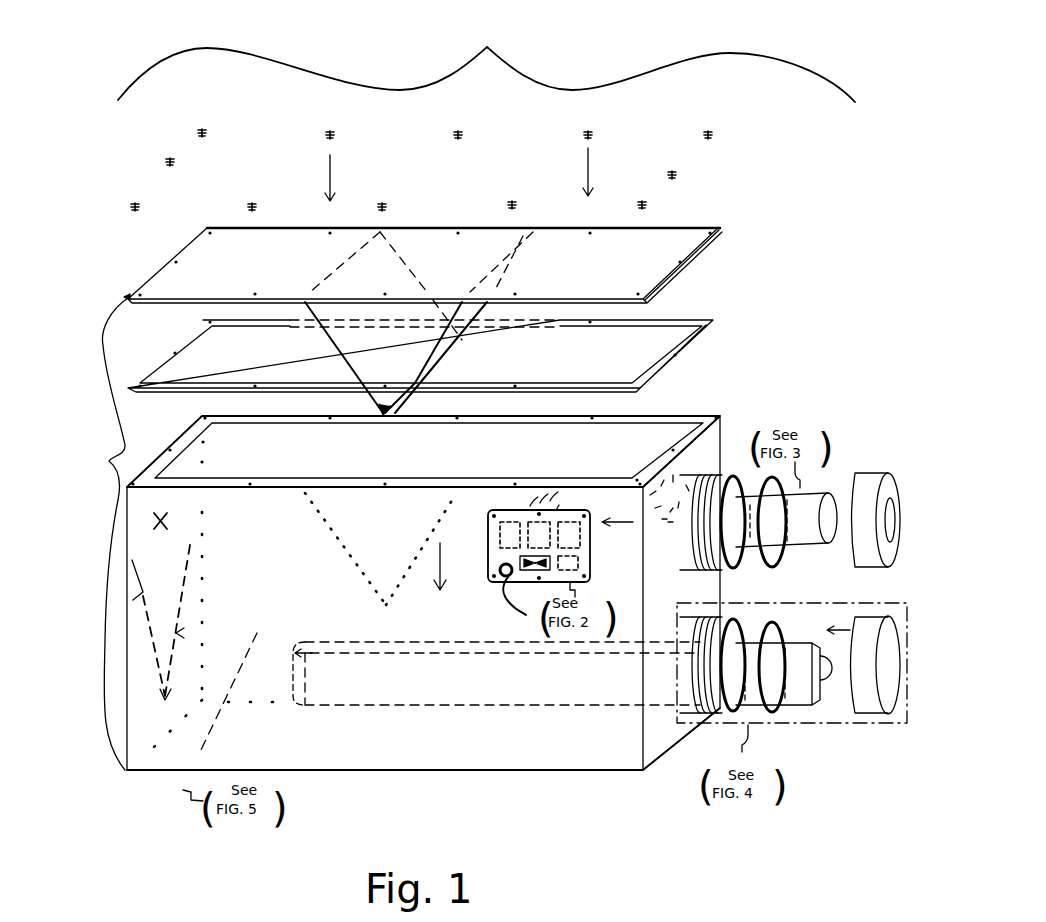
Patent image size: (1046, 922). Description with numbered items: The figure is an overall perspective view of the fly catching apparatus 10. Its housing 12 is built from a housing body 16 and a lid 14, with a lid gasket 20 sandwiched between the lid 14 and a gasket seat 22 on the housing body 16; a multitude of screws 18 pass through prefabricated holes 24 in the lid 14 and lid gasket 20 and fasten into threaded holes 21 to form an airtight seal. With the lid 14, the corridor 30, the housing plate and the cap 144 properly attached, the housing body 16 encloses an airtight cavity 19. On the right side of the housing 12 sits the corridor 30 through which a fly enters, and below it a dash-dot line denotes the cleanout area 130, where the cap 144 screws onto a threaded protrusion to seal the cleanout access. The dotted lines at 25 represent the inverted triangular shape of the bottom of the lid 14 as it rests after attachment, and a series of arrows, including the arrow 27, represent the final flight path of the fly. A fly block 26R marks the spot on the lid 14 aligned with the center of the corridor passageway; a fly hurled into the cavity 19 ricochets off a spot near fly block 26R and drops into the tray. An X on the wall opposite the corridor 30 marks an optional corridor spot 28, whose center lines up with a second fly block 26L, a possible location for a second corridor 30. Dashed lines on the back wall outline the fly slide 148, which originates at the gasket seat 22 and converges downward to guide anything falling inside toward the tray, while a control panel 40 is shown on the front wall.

The fly catching apparatus 10 is at (486, 57).
The housing 12 is at (400, 534).
The lid 14 is at (660, 248).
The housing body 16 is at (592, 772).
The screws 18 is at (674, 178).
The airtight cavity 19 is at (200, 752).
The lid gasket 20 is at (703, 337).
The threaded holes 21 is at (703, 417).
The gasket seat 22 is at (677, 417).
The prefabricated holes 24 is at (675, 262).
The dotted lines 25 is at (368, 582).
The fly block 26L is at (367, 327).
The fly block 26R is at (473, 325).
The flow direction arrow 27 is at (441, 545).
The optional corridor spot 28 is at (153, 521).
The corridor 30 is at (808, 488).
The control panel 40 is at (592, 556).
The cleanout area 130 is at (785, 725).
The cap 144 is at (870, 695).
The fly slide 148 is at (130, 607).